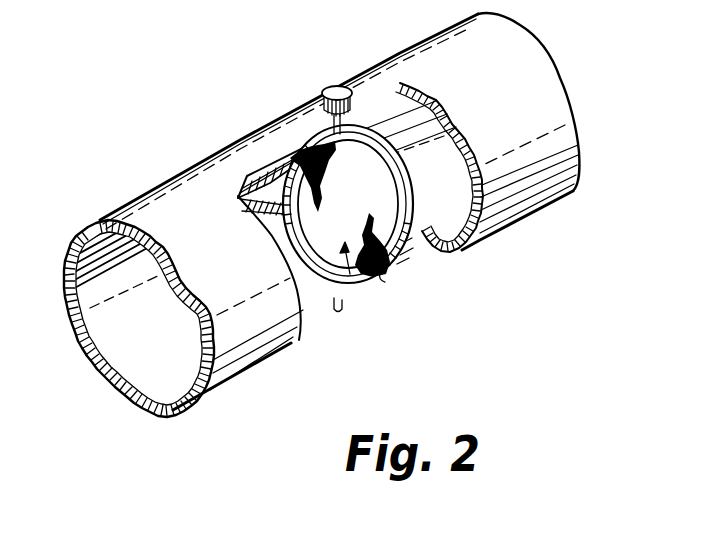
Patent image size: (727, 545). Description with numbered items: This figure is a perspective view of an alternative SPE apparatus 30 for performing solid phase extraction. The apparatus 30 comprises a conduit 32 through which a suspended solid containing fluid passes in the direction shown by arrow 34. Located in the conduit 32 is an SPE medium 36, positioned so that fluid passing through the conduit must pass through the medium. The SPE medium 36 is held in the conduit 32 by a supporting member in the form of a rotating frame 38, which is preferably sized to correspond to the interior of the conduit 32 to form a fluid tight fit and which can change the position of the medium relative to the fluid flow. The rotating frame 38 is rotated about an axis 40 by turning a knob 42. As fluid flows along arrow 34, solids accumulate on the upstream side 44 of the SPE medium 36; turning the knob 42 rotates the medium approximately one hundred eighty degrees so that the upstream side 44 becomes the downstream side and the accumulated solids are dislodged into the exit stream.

The SPE apparatus 30 is at (231, 80).
The conduit 32 is at (530, 62).
The arrow 34 is at (157, 317).
The SPE medium 36 is at (356, 278).
The rotating frame 38 is at (385, 287).
The axis 40 is at (334, 312).
The knob 42 is at (337, 86).
The upstream side 44 is at (327, 237).